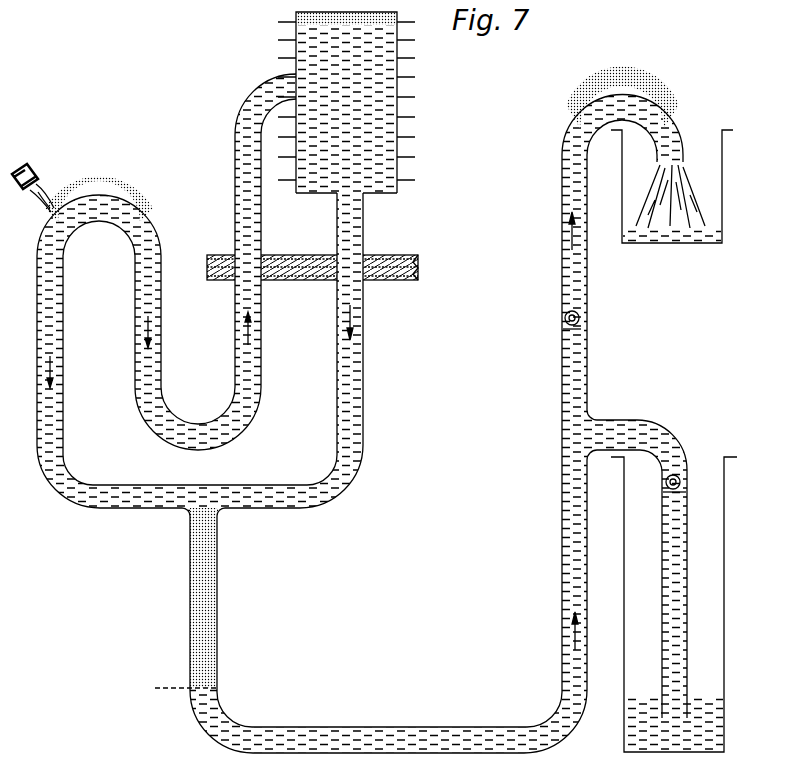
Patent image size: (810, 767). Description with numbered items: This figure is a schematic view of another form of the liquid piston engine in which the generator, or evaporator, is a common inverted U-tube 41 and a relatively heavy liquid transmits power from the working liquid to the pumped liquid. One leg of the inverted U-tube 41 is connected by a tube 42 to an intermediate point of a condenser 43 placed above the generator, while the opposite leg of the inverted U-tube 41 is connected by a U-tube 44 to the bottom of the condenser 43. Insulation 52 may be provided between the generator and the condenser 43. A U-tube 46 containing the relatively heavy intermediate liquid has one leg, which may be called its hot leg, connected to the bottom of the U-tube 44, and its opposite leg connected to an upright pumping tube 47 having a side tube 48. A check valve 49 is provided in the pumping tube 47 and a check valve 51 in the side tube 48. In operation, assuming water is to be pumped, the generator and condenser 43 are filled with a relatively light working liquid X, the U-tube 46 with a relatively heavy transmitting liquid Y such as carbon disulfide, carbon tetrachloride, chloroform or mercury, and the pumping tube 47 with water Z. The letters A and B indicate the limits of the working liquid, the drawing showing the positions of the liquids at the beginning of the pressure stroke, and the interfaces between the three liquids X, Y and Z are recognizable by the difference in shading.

The inverted U-tube 41 is at (63, 306).
The tube 42 is at (247, 298).
The condenser 43 is at (388, 187).
The U-tube 44 is at (305, 490).
The U-tube 46 is at (436, 737).
The upright pumping tube 47 is at (566, 496).
The side tube 48 is at (634, 412).
The check valve 49 is at (563, 312).
The check valve 51 is at (690, 477).
The insulation 52 is at (418, 282).
The working liquid X is at (110, 503).
The limit of working liquid A is at (190, 521).
The limit of working liquid B is at (180, 688).
The intermediate liquid Y is at (370, 700).
The pumped liquid Z is at (562, 541).